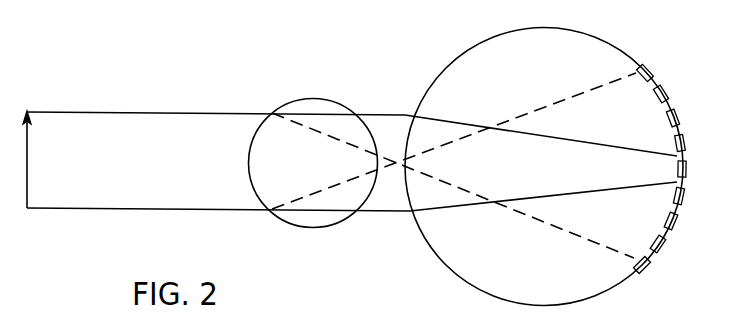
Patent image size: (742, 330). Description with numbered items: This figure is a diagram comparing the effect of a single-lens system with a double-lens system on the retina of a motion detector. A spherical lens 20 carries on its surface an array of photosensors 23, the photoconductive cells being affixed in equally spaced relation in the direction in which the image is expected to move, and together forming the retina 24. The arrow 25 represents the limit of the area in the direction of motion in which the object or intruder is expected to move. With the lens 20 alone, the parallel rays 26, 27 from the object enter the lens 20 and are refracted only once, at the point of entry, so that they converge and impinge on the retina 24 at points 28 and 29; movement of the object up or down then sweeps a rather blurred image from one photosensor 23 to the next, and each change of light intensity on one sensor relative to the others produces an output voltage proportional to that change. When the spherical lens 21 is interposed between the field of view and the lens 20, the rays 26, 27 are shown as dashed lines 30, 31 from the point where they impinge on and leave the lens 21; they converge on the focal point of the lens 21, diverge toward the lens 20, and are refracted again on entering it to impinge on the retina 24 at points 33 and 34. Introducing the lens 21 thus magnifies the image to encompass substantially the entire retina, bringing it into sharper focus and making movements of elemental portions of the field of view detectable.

The lens 20 is at (447, 63).
The spherical lens 21 is at (326, 99).
The photosensors 23 is at (647, 167).
The retina 24 is at (665, 119).
The arrow 25 is at (48, 175).
The ray 26 is at (176, 110).
The ray 27 is at (177, 208).
The point 28 is at (673, 154).
The point 29 is at (673, 180).
The refracted ray (dashed) 30 is at (327, 139).
The refracted ray (dashed) 31 is at (330, 188).
The point 33 is at (636, 78).
The point 34 is at (637, 262).